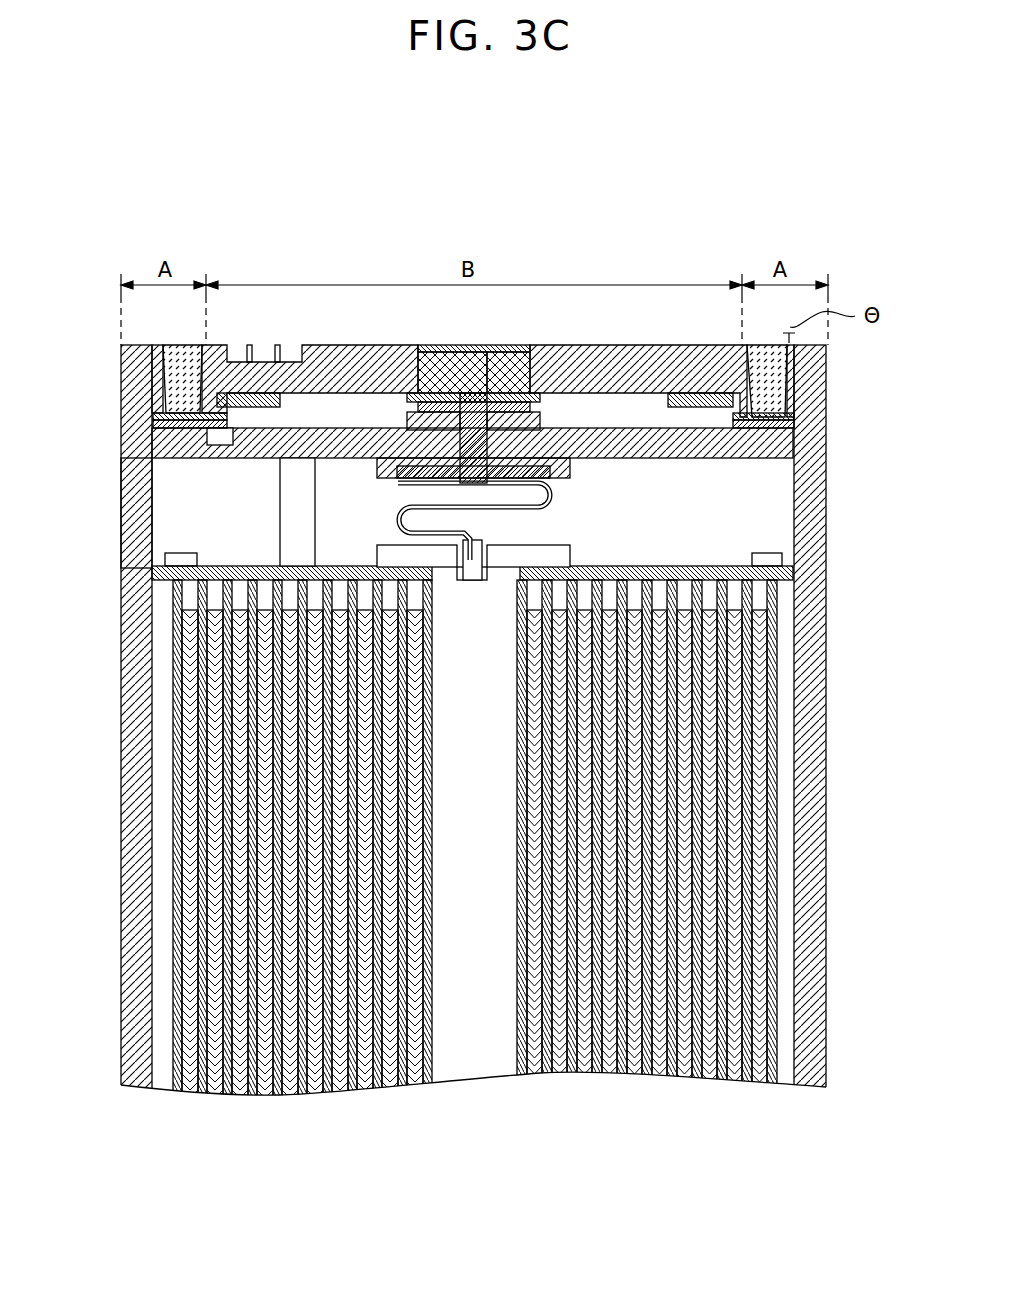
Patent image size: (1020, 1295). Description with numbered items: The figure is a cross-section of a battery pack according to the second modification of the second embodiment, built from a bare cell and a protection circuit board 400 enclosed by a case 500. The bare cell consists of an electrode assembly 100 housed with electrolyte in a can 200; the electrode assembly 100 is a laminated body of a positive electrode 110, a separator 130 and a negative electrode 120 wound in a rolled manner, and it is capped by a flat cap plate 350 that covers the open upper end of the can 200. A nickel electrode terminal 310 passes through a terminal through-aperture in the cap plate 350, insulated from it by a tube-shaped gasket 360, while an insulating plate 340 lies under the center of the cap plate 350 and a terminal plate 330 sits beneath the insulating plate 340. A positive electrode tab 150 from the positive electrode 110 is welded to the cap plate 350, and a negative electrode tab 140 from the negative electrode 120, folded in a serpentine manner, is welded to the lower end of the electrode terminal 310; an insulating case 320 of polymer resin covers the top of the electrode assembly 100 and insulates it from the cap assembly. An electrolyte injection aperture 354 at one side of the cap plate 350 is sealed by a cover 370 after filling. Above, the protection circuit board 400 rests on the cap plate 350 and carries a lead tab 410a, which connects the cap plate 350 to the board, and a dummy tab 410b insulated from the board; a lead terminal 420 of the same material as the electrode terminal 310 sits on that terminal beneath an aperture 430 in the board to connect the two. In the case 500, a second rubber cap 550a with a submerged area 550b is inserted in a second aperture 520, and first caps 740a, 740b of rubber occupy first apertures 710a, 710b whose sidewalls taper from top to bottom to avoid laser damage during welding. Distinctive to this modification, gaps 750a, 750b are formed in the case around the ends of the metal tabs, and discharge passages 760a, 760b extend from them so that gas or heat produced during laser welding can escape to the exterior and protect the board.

The electrode assembly 100 is at (547, 876).
The positive electrode 110 is at (724, 1084).
The negative electrode 120 is at (745, 1084).
The separator 130 is at (772, 1086).
The negative electrode tab 140 is at (402, 521).
The positive electrode tab 150 is at (280, 520).
The can 200 is at (826, 700).
The electrode terminal 310 is at (410, 397).
The insulating case 320 is at (793, 573).
The terminal plate 330 is at (545, 496).
The insulating plate 340 is at (570, 470).
The cap plate 350 is at (725, 458).
The electrolyte injection aperture 354 is at (153, 517).
The gasket 360 is at (592, 345).
The cover 370 is at (228, 466).
The protection circuit board 400 is at (228, 373).
The lead tab 410a is at (733, 400).
The dummy tab 410b is at (217, 400).
The lead terminal 420 is at (537, 420).
The aperture 430 is at (428, 382).
The case 500 is at (472, 327).
The second aperture 520 is at (424, 358).
The second rubber cap 550a is at (507, 345).
The submerged area 550b is at (490, 345).
The first aperture 710a is at (738, 352).
The first aperture 710b is at (183, 415).
The first cap 740a is at (782, 350).
The first cap 740b is at (163, 352).
The gap 750a is at (794, 416).
The gap 750b is at (153, 416).
The discharge passage 760a is at (794, 424).
The discharge passage 760b is at (153, 424).